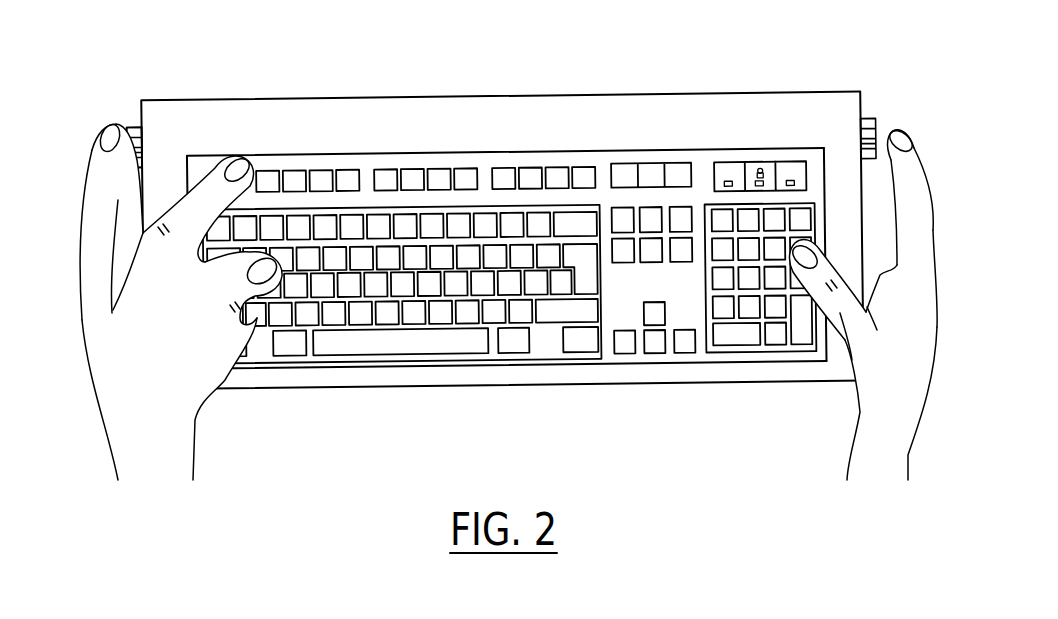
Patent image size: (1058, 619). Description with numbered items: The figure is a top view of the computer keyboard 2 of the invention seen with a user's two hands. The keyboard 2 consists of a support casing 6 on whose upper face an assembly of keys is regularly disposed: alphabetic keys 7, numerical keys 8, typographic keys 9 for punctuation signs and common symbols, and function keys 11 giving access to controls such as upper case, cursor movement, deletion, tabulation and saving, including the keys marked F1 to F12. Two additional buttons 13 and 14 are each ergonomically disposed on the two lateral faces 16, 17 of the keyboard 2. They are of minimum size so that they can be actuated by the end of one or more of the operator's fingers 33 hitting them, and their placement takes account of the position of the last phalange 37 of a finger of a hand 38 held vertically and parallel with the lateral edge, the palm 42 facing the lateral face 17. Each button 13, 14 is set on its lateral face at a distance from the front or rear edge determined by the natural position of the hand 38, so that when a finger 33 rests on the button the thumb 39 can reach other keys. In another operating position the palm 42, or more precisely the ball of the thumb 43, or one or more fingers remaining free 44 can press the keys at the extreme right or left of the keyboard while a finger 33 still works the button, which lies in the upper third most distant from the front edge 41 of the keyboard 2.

The keyboard 2 is at (845, 92).
The support casing 6 is at (714, 116).
The alphabetic keys 7 is at (363, 322).
The numerical keys 8 is at (754, 306).
The typographic keys 9 is at (488, 318).
The function keys 11 is at (562, 167).
The additional button 13 is at (140, 128).
The additional button 14 is at (880, 120).
The lateral face 16 is at (139, 122).
The lateral face 17 is at (866, 213).
The fingers 33 is at (122, 200).
The last phalange 37 is at (908, 136).
The hand 38 is at (122, 373).
The thumb 39 is at (257, 313).
The front edge 41 is at (612, 385).
The palm 42 is at (912, 325).
The ball of the thumb 43 is at (218, 377).
The free fingers 44 is at (222, 160).